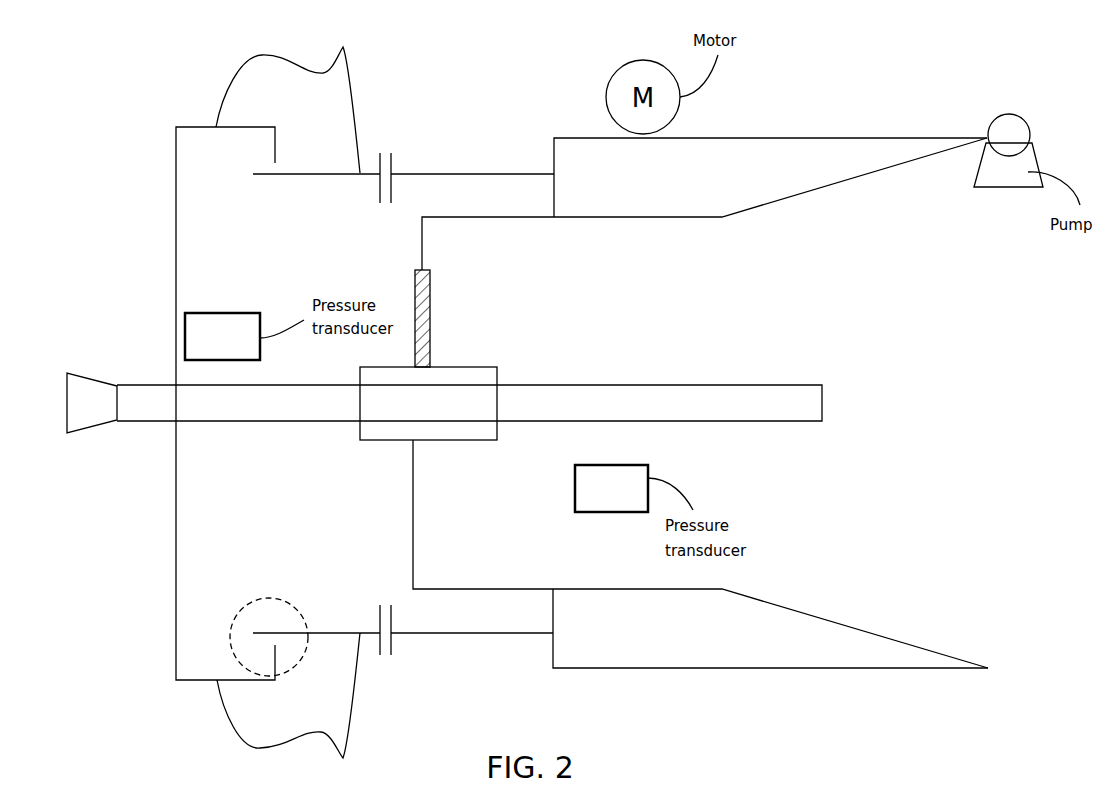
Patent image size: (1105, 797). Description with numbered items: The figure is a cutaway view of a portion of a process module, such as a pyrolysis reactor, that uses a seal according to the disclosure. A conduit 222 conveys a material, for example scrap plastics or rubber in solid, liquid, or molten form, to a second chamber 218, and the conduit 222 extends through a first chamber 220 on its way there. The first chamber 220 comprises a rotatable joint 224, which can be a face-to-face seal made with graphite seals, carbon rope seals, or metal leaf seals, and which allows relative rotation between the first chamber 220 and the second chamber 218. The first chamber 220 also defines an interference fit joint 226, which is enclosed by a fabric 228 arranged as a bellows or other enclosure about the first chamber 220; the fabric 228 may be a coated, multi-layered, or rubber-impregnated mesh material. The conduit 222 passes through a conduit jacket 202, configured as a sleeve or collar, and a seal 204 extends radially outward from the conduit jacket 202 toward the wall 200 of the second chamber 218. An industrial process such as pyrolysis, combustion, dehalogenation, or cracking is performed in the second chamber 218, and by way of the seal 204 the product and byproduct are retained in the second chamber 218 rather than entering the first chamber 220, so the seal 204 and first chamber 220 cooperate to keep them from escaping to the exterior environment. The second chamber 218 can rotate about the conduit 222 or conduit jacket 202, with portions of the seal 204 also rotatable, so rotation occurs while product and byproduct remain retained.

The wall of second chamber 200 is at (625, 217).
The conduit jacket 202 is at (497, 375).
The seal 204 is at (437, 232).
The second chamber 218 is at (530, 517).
The first chamber 220 is at (267, 270).
The conduit 222 is at (768, 421).
The rotatable joint 224 is at (400, 157).
The interference fit joint 226 is at (270, 600).
The fabric 228 is at (362, 82).